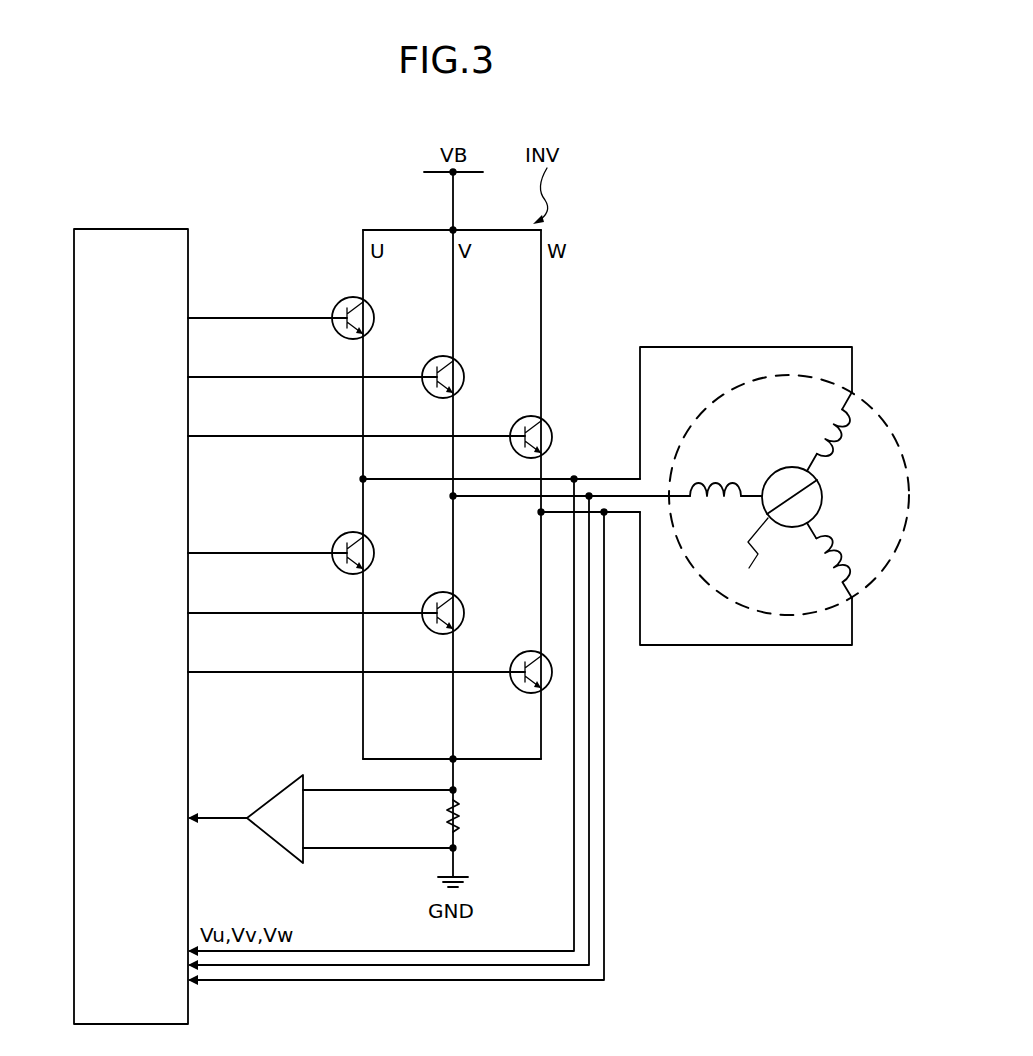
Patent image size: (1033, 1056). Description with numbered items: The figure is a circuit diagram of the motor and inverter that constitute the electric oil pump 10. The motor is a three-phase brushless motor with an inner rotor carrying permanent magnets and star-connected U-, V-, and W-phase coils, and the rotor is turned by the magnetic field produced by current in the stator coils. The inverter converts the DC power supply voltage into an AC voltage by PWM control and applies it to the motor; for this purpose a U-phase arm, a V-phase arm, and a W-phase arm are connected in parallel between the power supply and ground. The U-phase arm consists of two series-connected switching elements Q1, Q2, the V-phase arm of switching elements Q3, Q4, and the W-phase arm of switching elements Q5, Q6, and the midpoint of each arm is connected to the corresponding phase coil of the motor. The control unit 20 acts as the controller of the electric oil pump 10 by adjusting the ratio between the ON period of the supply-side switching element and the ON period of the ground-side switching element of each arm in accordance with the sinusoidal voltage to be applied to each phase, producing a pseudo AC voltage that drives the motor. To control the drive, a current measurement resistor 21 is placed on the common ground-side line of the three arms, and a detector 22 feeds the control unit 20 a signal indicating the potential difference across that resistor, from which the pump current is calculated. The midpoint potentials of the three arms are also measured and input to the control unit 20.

The electric oil pump 10 is at (769, 344).
The control unit 20 is at (127, 229).
The current measurement resistor 21 is at (466, 817).
The detector 22 is at (268, 796).
The switching element Q1 is at (352, 331).
The switching element Q2 is at (352, 566).
The switching element Q3 is at (441, 389).
The switching element Q4 is at (441, 626).
The switching element Q5 is at (529, 449).
The switching element Q6 is at (529, 684).